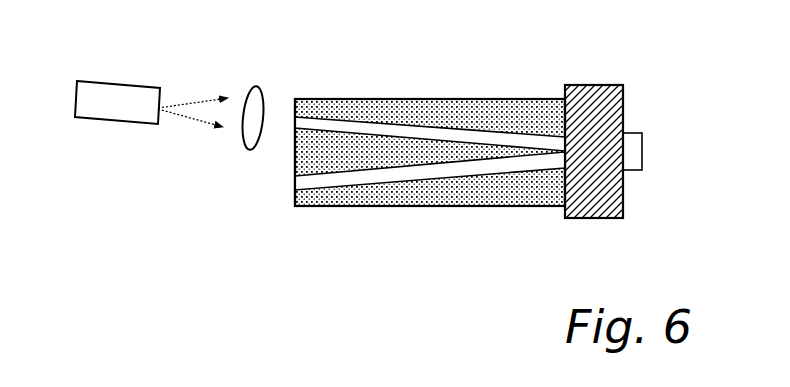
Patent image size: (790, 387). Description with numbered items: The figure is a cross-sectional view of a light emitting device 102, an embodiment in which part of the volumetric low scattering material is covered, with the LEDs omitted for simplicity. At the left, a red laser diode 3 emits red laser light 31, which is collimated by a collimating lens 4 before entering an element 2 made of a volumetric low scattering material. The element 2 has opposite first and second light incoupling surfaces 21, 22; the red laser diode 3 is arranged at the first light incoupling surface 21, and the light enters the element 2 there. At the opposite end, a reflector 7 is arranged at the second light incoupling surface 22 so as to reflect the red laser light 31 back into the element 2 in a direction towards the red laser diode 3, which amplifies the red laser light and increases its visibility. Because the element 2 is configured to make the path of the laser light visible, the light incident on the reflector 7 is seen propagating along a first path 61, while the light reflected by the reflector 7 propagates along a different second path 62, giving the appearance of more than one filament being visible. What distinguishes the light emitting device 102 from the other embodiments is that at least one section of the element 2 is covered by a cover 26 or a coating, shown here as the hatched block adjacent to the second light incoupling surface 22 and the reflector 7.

The light emitting device 102 is at (366, 62).
The red laser diode 3 is at (117, 97).
The red laser light 31 is at (187, 100).
The collimating lens 4 is at (260, 95).
The element 2 is at (516, 98).
The first path 61 is at (427, 132).
The second path 62 is at (383, 177).
The first light incoupling surface 21 is at (294, 165).
The second light incoupling surface 22 is at (623, 185).
The cover 26 is at (588, 219).
The reflector 7 is at (642, 153).